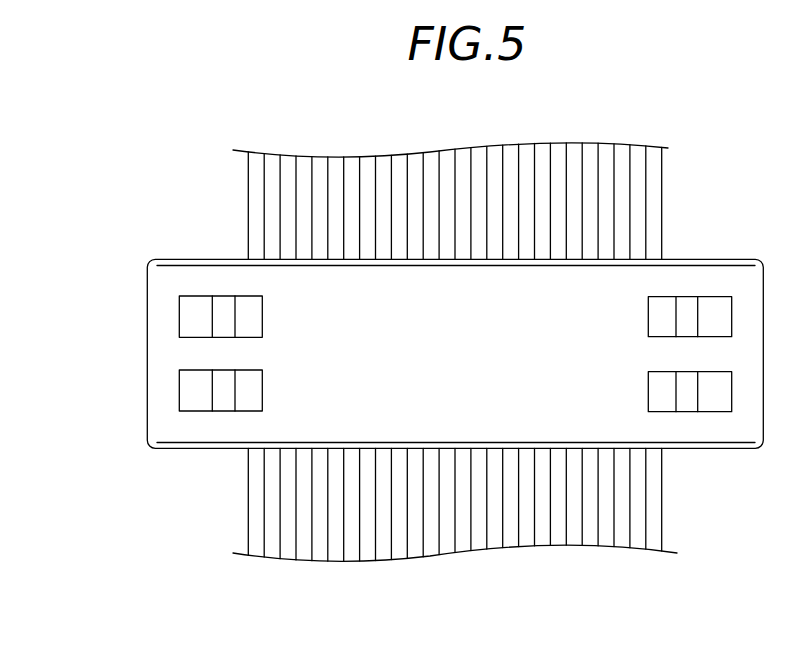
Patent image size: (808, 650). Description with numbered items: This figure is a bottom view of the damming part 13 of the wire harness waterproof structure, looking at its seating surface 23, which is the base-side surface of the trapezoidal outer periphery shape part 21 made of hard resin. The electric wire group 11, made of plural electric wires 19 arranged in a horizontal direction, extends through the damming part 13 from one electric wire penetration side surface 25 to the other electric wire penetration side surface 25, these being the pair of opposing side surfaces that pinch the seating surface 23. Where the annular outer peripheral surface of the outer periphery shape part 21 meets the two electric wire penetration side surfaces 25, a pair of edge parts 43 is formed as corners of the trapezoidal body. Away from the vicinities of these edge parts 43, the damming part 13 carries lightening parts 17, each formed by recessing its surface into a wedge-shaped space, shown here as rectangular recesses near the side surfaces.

The electric wire group 11 is at (241, 191).
The damming part 13 is at (140, 346).
The lightening parts 17 is at (179, 311).
The electric wires 19 is at (290, 542).
The outer periphery shape part 21 is at (402, 313).
The seating surface 23 is at (518, 410).
The electric wire penetration side surfaces 25 is at (705, 257).
The edge parts 43 is at (212, 257).